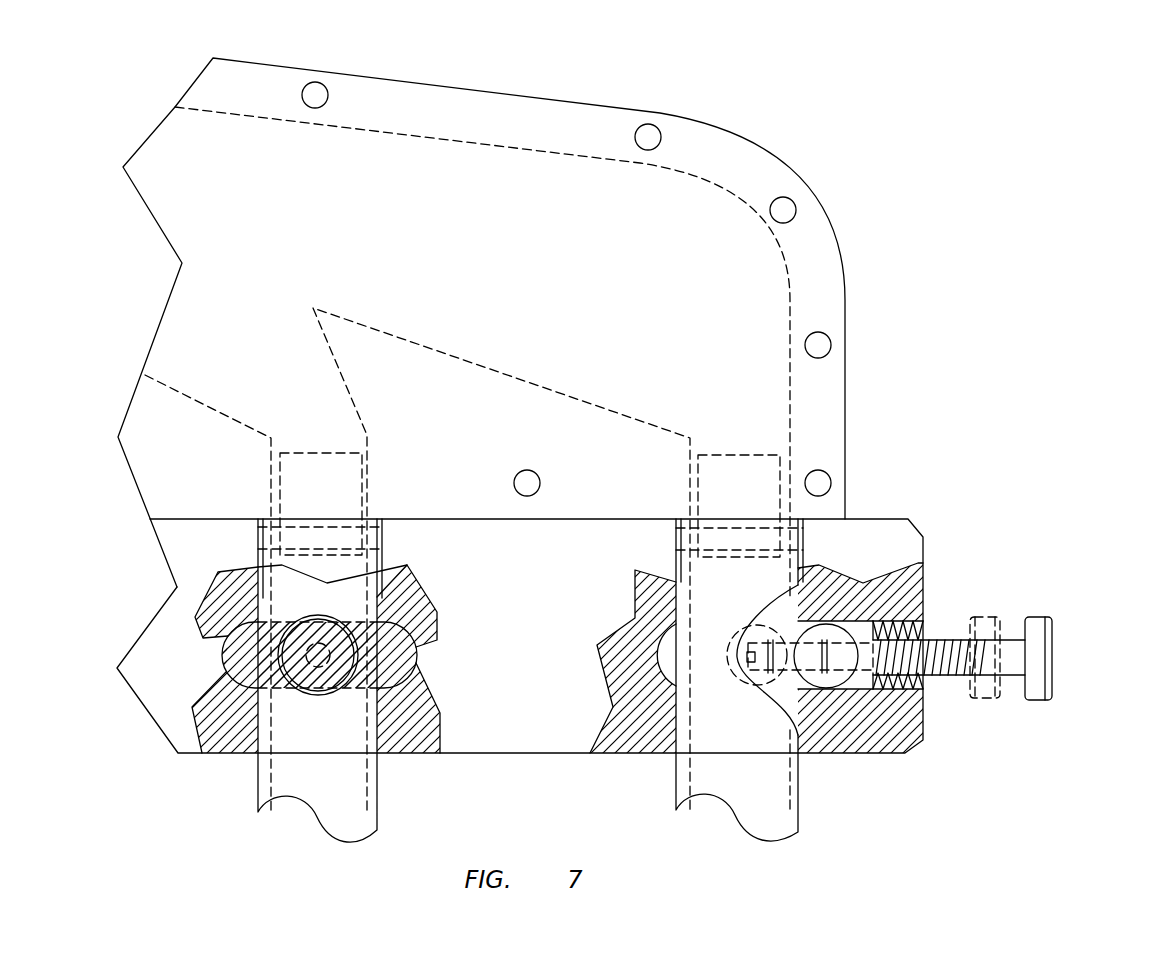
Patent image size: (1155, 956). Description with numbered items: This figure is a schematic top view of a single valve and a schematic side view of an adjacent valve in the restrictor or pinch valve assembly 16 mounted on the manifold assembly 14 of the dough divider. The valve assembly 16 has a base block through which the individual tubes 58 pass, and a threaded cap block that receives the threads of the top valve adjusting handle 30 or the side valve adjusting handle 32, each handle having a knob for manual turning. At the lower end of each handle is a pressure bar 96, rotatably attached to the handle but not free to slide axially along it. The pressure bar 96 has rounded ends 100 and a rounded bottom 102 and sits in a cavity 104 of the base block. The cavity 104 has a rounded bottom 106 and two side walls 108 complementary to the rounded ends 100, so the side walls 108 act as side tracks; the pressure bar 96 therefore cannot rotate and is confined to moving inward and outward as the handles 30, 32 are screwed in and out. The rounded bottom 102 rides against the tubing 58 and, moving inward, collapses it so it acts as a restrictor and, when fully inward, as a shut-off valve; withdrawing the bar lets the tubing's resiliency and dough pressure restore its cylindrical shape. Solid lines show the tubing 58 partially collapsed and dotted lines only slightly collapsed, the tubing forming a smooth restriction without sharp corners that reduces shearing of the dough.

The manifold assembly 14 is at (837, 253).
The restrictor or pinch valve assembly 16 is at (868, 520).
The top valve adjusting handle 30 is at (317, 697).
The side valve adjusting handle 32 is at (1040, 617).
The tube 58 is at (677, 787).
The pressure bar 96 is at (383, 587).
The rounded ends 100 is at (410, 657).
The rounded bottom 102 is at (737, 658).
The cavity 104 is at (232, 604).
The rounded bottom 106 is at (677, 647).
The side walls 108 is at (224, 655).